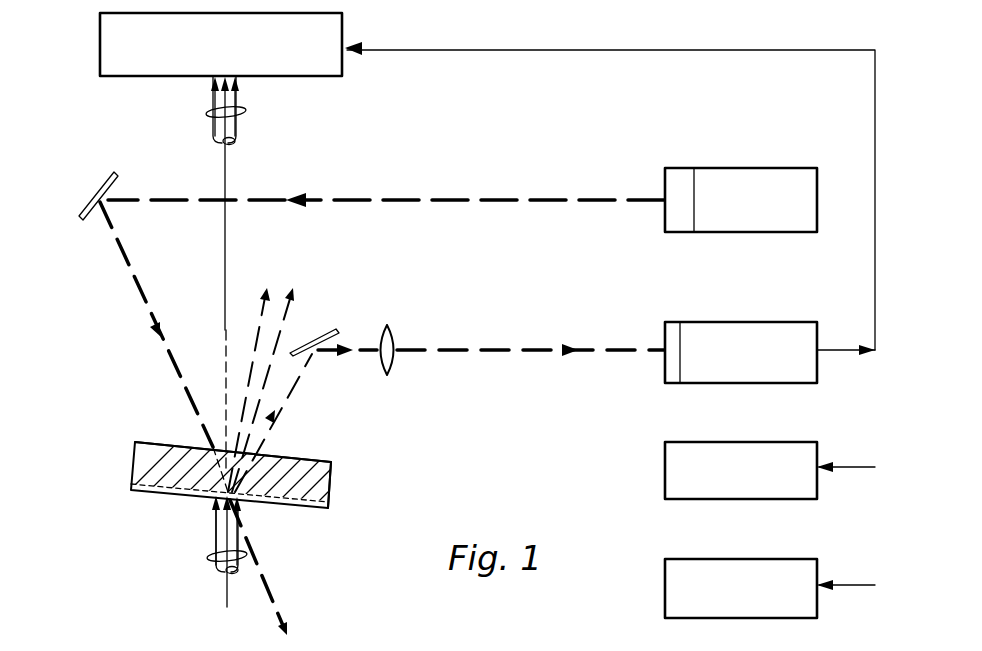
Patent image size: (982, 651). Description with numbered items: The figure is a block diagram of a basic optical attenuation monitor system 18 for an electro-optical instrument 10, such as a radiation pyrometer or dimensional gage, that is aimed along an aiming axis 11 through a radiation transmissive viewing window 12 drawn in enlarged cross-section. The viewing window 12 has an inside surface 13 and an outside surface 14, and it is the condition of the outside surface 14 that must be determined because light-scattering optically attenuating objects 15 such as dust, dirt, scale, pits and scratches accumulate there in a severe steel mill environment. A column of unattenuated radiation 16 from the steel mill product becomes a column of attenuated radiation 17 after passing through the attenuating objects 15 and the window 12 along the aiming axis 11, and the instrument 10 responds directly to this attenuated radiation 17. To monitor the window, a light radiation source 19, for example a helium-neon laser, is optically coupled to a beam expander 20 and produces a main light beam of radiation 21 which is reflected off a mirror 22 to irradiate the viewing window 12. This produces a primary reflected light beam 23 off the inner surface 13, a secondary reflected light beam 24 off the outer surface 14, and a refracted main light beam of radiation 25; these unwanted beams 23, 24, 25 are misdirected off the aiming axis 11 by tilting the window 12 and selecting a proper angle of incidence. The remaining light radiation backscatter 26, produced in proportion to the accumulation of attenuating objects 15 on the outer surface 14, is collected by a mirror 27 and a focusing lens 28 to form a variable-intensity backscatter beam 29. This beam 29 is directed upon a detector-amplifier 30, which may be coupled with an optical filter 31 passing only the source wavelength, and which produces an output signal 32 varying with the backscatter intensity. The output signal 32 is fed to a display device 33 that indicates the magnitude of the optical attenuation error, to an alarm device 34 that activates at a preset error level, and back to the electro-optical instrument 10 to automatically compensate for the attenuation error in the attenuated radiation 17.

The electro-optical instrument 10 is at (322, 76).
The aiming axis 11 is at (230, 250).
The viewing window 12 is at (136, 464).
The inside surface 13 is at (172, 442).
The outside surface 14 is at (330, 490).
The optically attenuating objects 15 is at (282, 506).
The column of unattenuated radiation 16 is at (208, 556).
The column of attenuated radiation 17 is at (246, 111).
The optical attenuation monitor system 18 is at (580, 135).
The light radiation source 19 is at (722, 168).
The beam expander 20 is at (678, 168).
The main light beam of radiation 21 is at (350, 200).
The mirror 22 is at (100, 186).
The primary reflected light beam 23 is at (255, 330).
The secondary reflected light beam 24 is at (292, 318).
The refracted main light beam of radiation 25 is at (284, 616).
The light radiation backscatter 26 is at (290, 406).
The mirror 27 is at (326, 333).
The focusing lens 28 is at (393, 325).
The variable-intensity backscatter beam 29 is at (490, 350).
The detector-amplifier 30 is at (744, 322).
The optical filter 31 is at (672, 322).
The output signal 32 is at (840, 350).
The display device 33 is at (700, 442).
The alarm device 34 is at (708, 559).